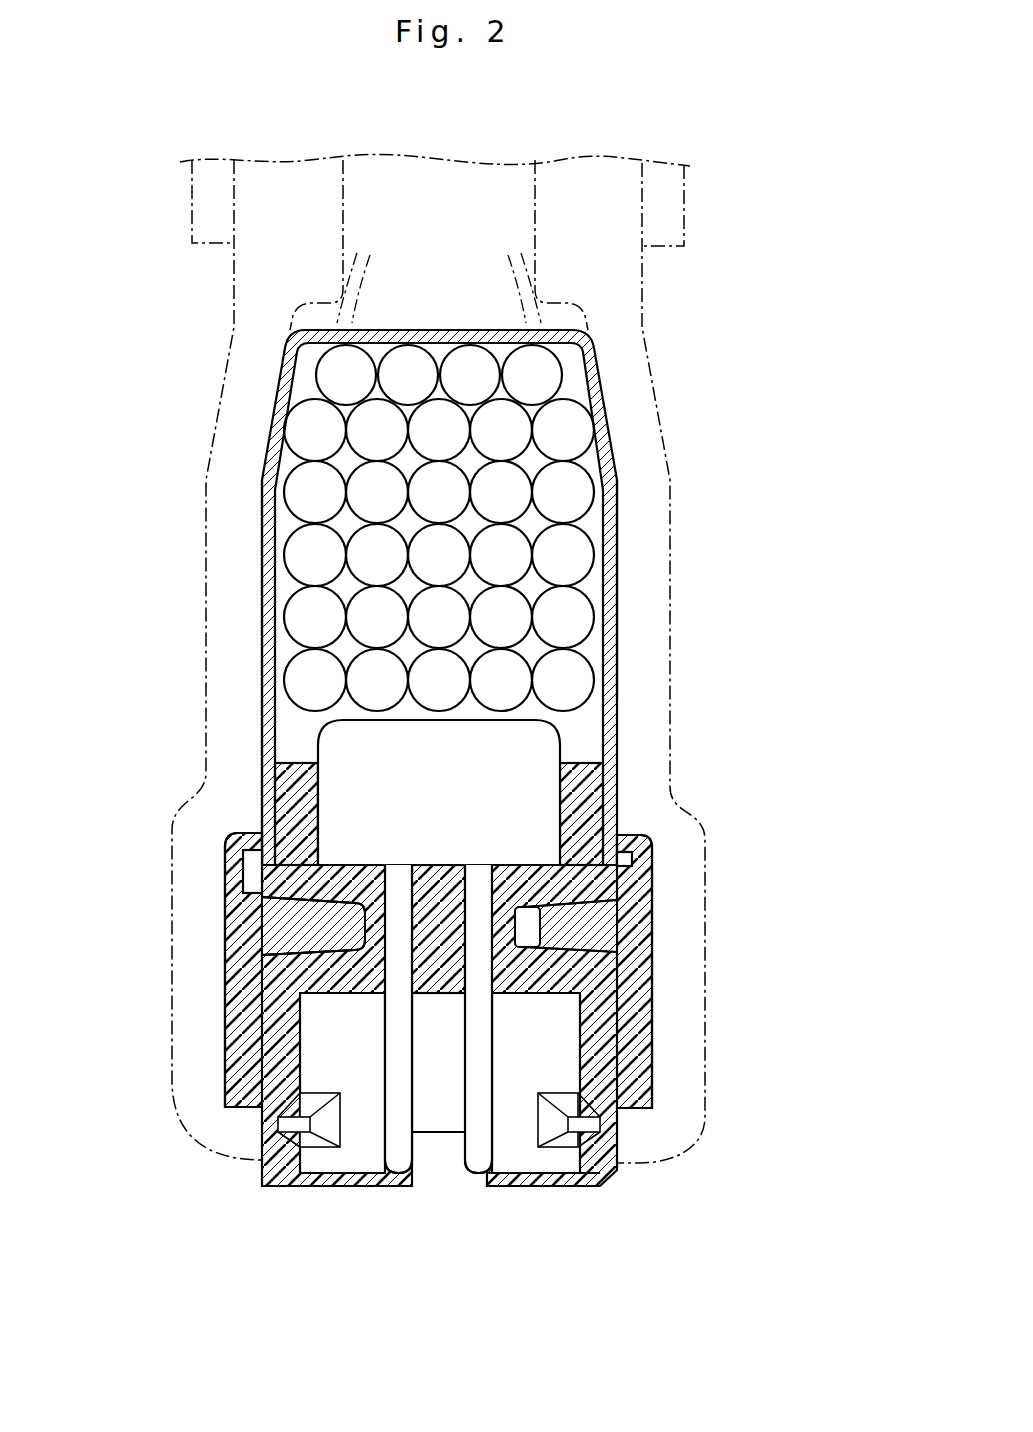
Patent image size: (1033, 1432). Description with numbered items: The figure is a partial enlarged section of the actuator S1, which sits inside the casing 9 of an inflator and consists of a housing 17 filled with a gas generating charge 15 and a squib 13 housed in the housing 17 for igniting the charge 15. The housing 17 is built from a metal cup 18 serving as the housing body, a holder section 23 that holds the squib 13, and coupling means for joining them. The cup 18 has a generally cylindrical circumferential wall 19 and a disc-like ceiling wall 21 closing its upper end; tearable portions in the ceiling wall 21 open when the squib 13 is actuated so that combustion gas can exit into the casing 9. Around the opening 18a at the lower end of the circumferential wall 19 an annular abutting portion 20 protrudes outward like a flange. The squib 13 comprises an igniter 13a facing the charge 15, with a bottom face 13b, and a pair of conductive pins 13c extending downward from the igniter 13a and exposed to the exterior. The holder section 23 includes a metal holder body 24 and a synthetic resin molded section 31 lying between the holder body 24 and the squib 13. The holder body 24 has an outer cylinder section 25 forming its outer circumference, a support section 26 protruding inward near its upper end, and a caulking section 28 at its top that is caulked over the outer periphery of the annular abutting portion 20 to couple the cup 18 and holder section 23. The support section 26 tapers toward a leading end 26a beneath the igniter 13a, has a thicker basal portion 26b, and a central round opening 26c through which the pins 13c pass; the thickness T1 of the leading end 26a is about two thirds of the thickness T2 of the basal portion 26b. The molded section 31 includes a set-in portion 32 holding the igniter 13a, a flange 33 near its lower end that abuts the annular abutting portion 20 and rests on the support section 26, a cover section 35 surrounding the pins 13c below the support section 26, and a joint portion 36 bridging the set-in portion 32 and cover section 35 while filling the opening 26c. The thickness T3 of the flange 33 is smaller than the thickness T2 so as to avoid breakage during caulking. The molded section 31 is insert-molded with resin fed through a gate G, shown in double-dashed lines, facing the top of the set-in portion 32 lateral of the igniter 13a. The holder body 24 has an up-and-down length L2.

The casing 9 is at (632, 322).
The squib 13 is at (378, 1098).
The igniter 13a is at (528, 740).
The bottom face of the igniter 13b is at (437, 870).
The conductive pins 13c is at (479, 1165).
The gas generating charge 15 is at (580, 490).
The housing 17 is at (110, 638).
The cup 18 is at (247, 630).
The opening of the cup 18a is at (582, 855).
The circumferential wall 19 is at (615, 561).
The annular abutting portion 20 is at (636, 858).
The ceiling wall 21 is at (437, 330).
The holder section 23 is at (218, 850).
The holder body 24 is at (660, 1097).
The outer cylinder section 25 is at (233, 1073).
The support section 26 is at (315, 895).
The leading end of the support section 26a is at (237, 962).
The basal portion of the support section 26b is at (250, 916).
The opening of the support section 26c is at (468, 965).
The caulking section 28 is at (650, 830).
The molded section 31 is at (253, 1143).
The set-in portion 32 is at (297, 770).
The flange 33 is at (257, 880).
The cover section 35 is at (607, 1083).
The joint portion 36 is at (432, 918).
The actuator S1 is at (248, 443).
The gate G is at (566, 733).
The thickness of the leading end T1 is at (520, 912).
The thickness of the basal portion T2 is at (666, 873).
The thickness of the flange T3 is at (160, 895).
The length of the holder body L2 is at (716, 835).